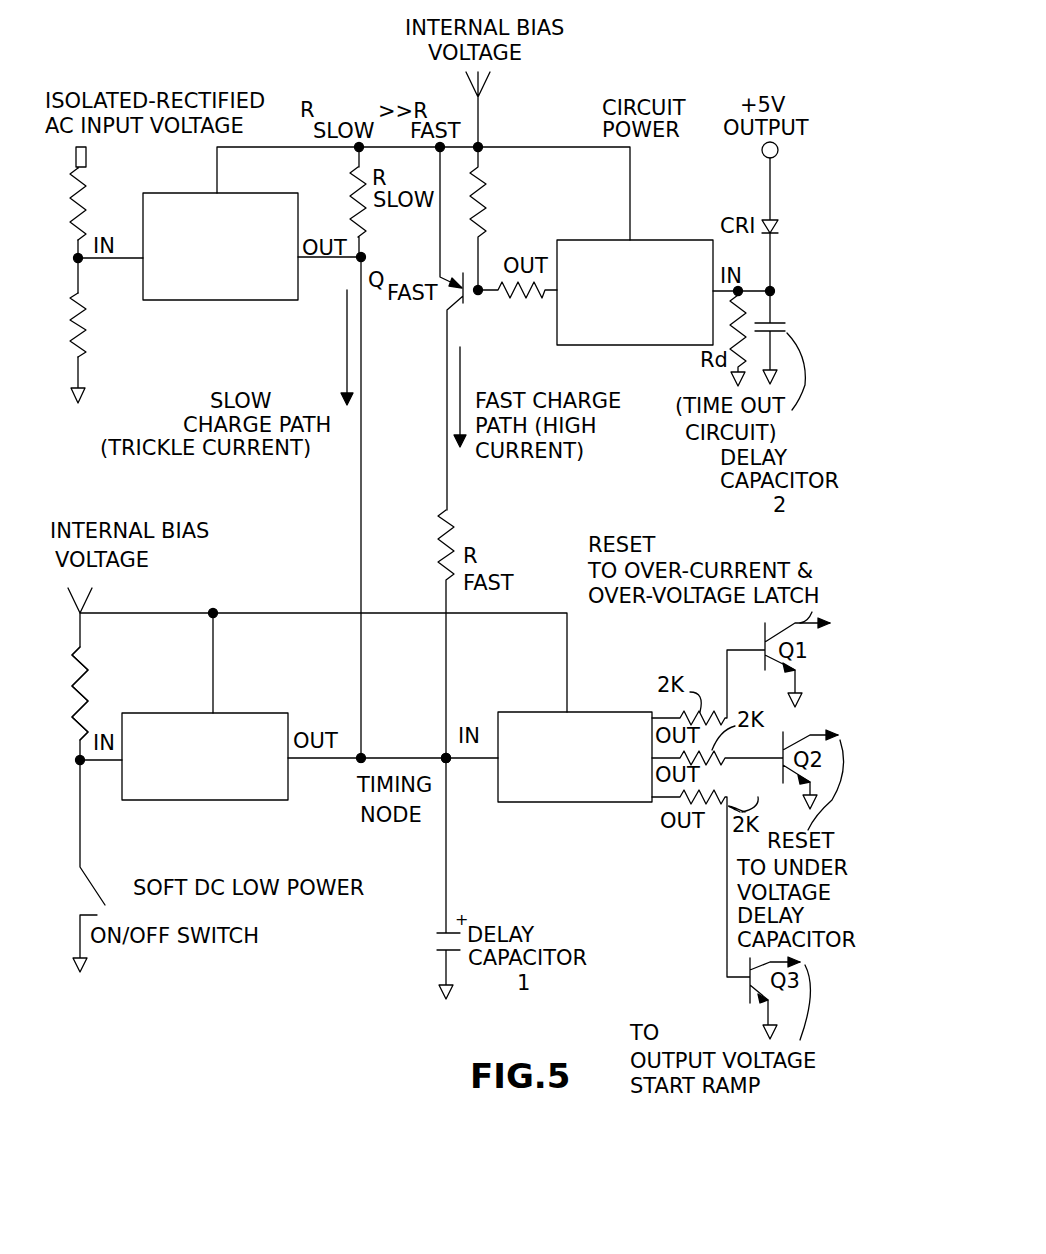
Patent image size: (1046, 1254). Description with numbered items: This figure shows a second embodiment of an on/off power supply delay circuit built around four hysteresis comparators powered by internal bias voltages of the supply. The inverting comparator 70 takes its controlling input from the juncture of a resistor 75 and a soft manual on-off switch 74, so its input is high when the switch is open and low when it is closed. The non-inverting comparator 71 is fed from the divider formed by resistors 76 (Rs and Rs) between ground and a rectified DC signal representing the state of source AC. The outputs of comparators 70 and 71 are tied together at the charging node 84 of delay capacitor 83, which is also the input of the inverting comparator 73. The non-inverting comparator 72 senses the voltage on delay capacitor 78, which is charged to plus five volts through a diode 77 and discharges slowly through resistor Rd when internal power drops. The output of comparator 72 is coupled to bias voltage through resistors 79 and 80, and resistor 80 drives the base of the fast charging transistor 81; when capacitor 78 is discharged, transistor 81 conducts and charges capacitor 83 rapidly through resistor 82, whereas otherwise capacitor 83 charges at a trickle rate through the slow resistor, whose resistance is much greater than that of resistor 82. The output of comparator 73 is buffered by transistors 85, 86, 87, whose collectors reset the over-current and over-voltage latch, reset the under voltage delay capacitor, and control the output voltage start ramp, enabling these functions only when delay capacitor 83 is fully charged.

The inverting hysteresis comparator 70 is at (138, 713).
The non-inverting hysteresis comparator 71 is at (236, 193).
The non-inverting hysteresis comparator 72 is at (637, 240).
The inverting hysteresis comparator 73 is at (578, 712).
The manual on-off switch 74 is at (82, 896).
The resistor 75 is at (88, 670).
The resistors Rs1 and Rs2 76 is at (68, 213).
The diode 77 is at (782, 228).
The delay capacitor 2 78 is at (786, 333).
The resistor 79 is at (486, 214).
The resistor 80 is at (497, 295).
The fast charging transistor Qfast 81 is at (440, 305).
The resistor Rfast 82 is at (452, 527).
The delay capacitor 1 83 is at (440, 955).
The charging node 84 is at (440, 772).
The transistor Q1 85 is at (762, 638).
The transistor Q2 86 is at (778, 748).
The transistor Q3 87 is at (748, 982).